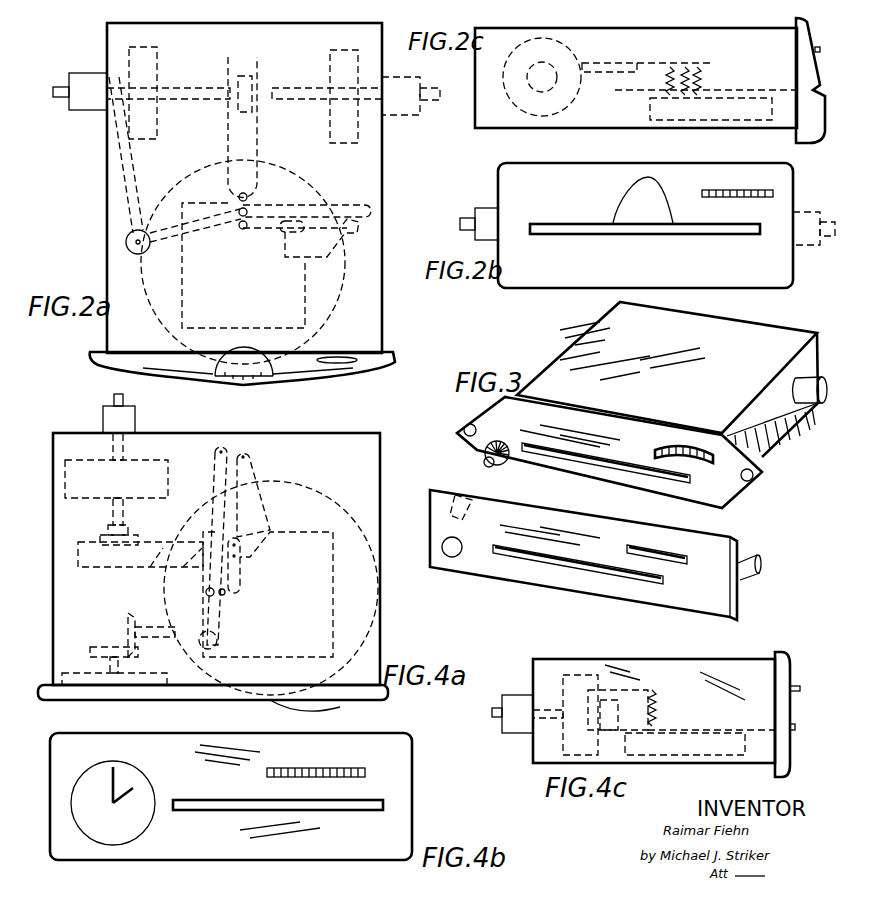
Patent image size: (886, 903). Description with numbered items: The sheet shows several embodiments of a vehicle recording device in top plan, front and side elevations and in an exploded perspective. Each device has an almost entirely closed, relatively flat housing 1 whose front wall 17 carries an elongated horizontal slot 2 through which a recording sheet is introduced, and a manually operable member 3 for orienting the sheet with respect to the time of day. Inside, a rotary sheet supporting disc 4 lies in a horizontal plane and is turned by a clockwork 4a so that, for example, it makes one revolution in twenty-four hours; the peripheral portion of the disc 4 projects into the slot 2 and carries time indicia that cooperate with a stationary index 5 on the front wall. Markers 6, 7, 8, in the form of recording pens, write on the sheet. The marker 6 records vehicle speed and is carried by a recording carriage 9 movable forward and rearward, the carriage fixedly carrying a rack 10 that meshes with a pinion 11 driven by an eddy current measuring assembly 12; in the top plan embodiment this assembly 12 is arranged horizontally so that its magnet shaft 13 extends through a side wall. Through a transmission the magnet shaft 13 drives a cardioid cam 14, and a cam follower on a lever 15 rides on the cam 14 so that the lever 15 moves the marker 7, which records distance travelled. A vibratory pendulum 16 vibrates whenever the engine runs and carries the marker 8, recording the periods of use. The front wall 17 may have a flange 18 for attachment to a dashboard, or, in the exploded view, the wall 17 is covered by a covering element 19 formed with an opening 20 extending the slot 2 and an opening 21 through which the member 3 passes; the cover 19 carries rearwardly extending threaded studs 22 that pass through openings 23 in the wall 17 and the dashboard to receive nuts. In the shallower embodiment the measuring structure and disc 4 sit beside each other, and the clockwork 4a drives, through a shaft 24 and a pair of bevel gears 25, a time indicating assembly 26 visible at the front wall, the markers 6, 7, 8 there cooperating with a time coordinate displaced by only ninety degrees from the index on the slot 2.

In FIG. 2a, the housing 1 is at (334, 40).
In FIG. 4a, the housing 1 is at (322, 446).
In FIG. 2b, the housing 1 is at (677, 176).
In FIG. 3, the housing 1 is at (745, 335).
In FIG. 4b, the housing 1 is at (187, 746).
In FIG. 2a, the slot 2 is at (238, 381).
In FIG. 2c, the slot 2 is at (818, 91).
In FIG. 2b, the slot 2 is at (583, 232).
In FIG. 3, the slot 2 is at (596, 460).
In FIG. 4c, the slot 2 is at (796, 727).
In FIG. 4b, the slot 2 is at (240, 811).
In FIG. 4a, the manually operable member 3 is at (340, 708).
In FIG. 2c, the manually operable member 3 is at (819, 48).
In FIG. 2b, the manually operable member 3 is at (750, 197).
In FIG. 3, the manually operable member 3 is at (685, 453).
In FIG. 4c, the manually operable member 3 is at (801, 688).
In FIG. 4b, the manually operable member 3 is at (332, 770).
In FIG. 4a, the sheet supporting disc 4 is at (345, 525).
In FIG. 2a, the clockwork 4a is at (243, 265).
In FIG. 4a, the clockwork 4a is at (268, 594).
In FIG. 2c, the clockwork 4a is at (670, 110).
In FIG. 4c, the clockwork 4a is at (675, 746).
In FIG. 2a, the index 5 is at (244, 359).
In FIG. 2b, the index 5 is at (647, 234).
In FIG. 2a, the marker 6 is at (248, 198).
In FIG. 4a, the marker 6 is at (206, 592).
In FIG. 2c, the marker 6 is at (671, 66).
In FIG. 2a, the marker 7 is at (240, 215).
In FIG. 4a, the marker 7 is at (223, 595).
In FIG. 2c, the marker 7 is at (686, 66).
In FIG. 2a, the marker 8 is at (244, 229).
In FIG. 4a, the marker 8 is at (238, 588).
In FIG. 2c, the marker 8 is at (700, 66).
In FIG. 2a, the recording carriage 9 is at (248, 148).
In FIG. 4a, the rack 10 is at (160, 562).
In FIG. 2a, the pinion 11 is at (248, 90).
In FIG. 4a, the pinion 11 is at (102, 548).
In FIG. 2a, the eddy current measuring assembly 12 is at (150, 62).
In FIG. 4a, the eddy current measuring assembly 12 is at (165, 485).
In FIG. 2c, the eddy current measuring assembly 12 is at (528, 50).
In FIG. 4c, the eddy current measuring assembly 12 is at (576, 675).
In FIG. 2a, the magnet shaft 13 is at (55, 88).
In FIG. 4a, the magnet shaft 13 is at (124, 402).
In FIG. 2b, the magnet shaft 13 is at (469, 222).
In FIG. 4c, the magnet shaft 13 is at (493, 713).
In FIG. 4a, the cam 14 is at (205, 650).
In FIG. 2a, the lever 15 is at (350, 213).
In FIG. 4a, the lever 15 is at (218, 476).
In FIG. 2a, the vibratory pendulum 16 is at (345, 240).
In FIG. 4a, the vibratory pendulum 16 is at (250, 478).
In FIG. 2a, the front wall 17 is at (372, 370).
In FIG. 4a, the front wall 17 is at (65, 690).
In FIG. 3, the front wall 17 is at (483, 416).
In FIG. 4c, the front wall 17 is at (787, 665).
In FIG. 2a, the flange 18 is at (385, 358).
In FIG. 3, the covering element 19 is at (715, 598).
In FIG. 3, the opening 20 is at (568, 567).
In FIG. 3, the opening 21 is at (690, 557).
In FIG. 3, the threaded studs 22 is at (455, 494).
In FIG. 3, the openings 23 is at (754, 475).
In FIG. 4a, the shaft 24 is at (145, 627).
In FIG. 4a, the bevel gears 25 is at (125, 636).
In FIG. 4a, the time indicating assembly 26 is at (115, 690).
In FIG. 4b, the time indicating assembly 26 is at (135, 778).